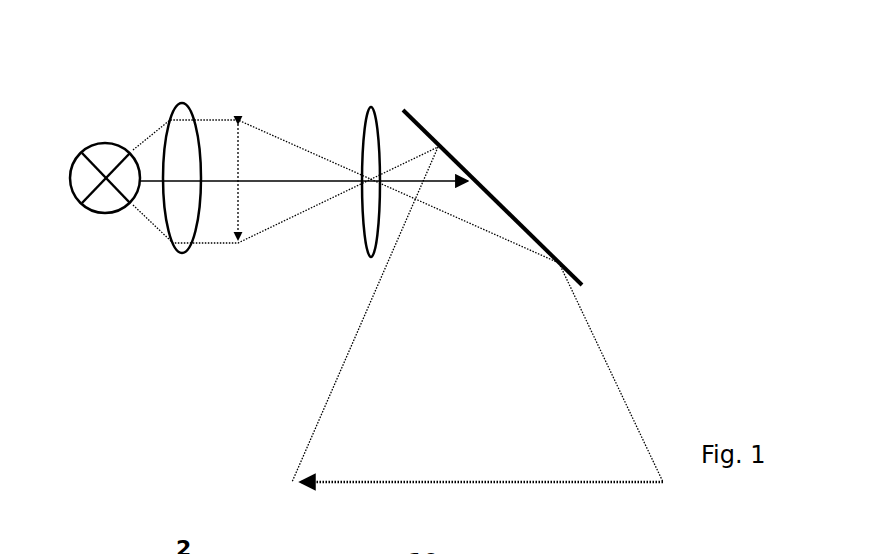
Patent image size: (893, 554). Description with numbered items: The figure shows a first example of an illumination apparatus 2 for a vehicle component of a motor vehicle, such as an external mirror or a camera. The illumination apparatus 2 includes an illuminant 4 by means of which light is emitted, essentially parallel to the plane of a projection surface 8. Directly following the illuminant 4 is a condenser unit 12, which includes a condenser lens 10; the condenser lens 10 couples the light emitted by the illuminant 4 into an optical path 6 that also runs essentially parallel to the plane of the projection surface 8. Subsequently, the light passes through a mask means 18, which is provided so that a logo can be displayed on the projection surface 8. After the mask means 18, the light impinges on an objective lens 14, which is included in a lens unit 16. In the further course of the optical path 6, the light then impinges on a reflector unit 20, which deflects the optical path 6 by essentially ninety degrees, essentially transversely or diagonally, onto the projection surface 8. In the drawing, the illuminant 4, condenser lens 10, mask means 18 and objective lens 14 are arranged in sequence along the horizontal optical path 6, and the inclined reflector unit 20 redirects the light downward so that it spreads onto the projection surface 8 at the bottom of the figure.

The illumination apparatus 2 is at (95, 120).
The illuminant 4 is at (78, 192).
The optical path 6 is at (300, 183).
The projection surface 8 is at (527, 483).
The condenser lens 10 is at (193, 108).
The condenser unit 12 is at (154, 96).
The objective lens 14 is at (373, 108).
The lens unit 16 is at (350, 264).
The mask means 18 is at (240, 197).
The reflector unit 20 is at (508, 208).